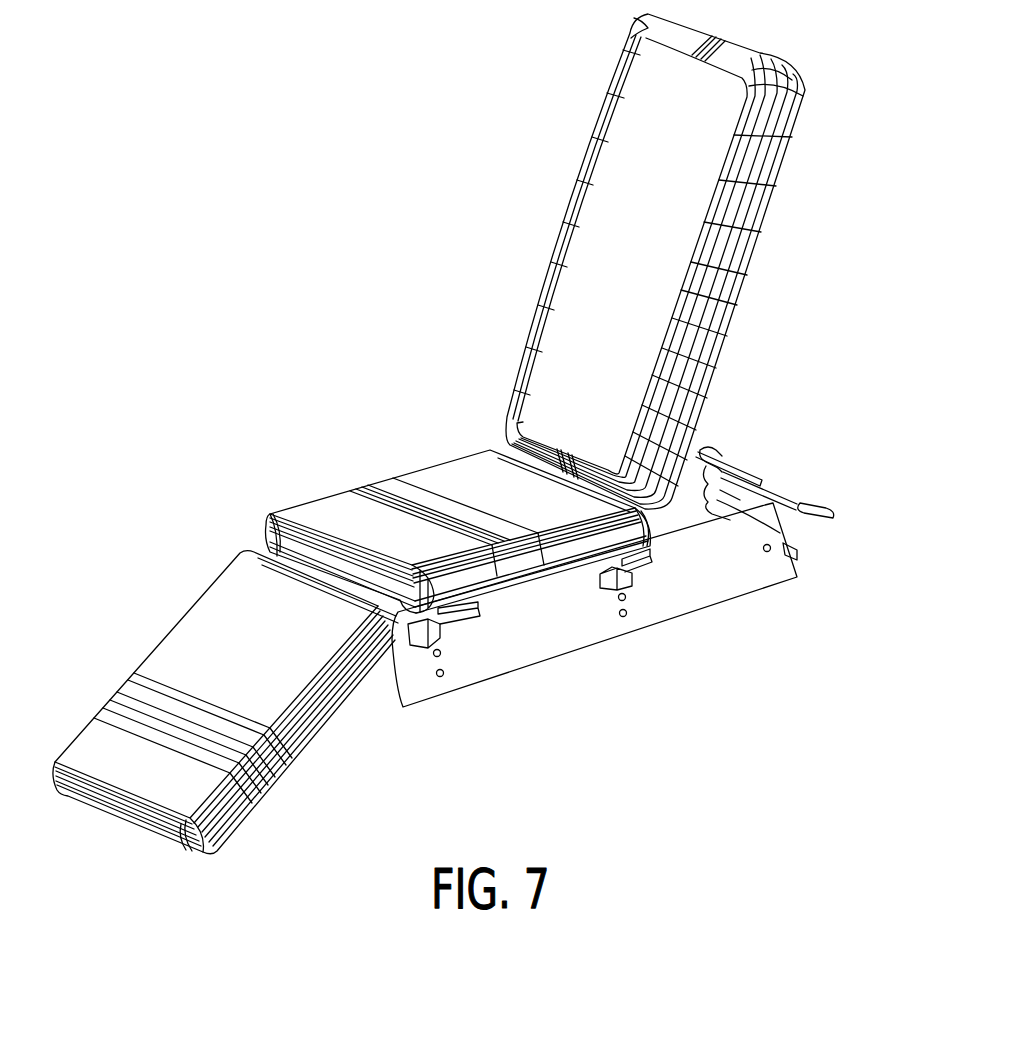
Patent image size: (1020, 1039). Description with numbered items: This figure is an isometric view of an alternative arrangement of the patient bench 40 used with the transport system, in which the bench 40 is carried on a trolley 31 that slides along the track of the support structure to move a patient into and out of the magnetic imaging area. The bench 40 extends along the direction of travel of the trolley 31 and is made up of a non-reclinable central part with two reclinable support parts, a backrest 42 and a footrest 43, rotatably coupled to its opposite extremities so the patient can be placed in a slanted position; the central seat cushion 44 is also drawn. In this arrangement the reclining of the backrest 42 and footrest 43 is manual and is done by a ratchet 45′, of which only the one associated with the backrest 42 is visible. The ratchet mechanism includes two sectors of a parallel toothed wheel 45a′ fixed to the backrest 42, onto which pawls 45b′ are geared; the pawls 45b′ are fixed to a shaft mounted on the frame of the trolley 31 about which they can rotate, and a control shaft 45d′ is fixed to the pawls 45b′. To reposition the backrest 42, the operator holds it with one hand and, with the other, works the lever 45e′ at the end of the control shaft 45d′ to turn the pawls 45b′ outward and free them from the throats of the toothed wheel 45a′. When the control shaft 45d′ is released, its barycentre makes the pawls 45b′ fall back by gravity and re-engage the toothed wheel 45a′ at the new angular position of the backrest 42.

The bench 40 is at (425, 343).
The backrest 42 is at (574, 202).
The seat cushion 44 is at (397, 477).
The footrest 43 is at (140, 663).
The trolley 31 is at (610, 641).
The ratchet 45′ is at (718, 449).
The toothed wheel 45a′ is at (780, 533).
The pawls 45b′ is at (763, 480).
The control shaft 45d′ is at (797, 503).
The lever 45e′ is at (835, 511).